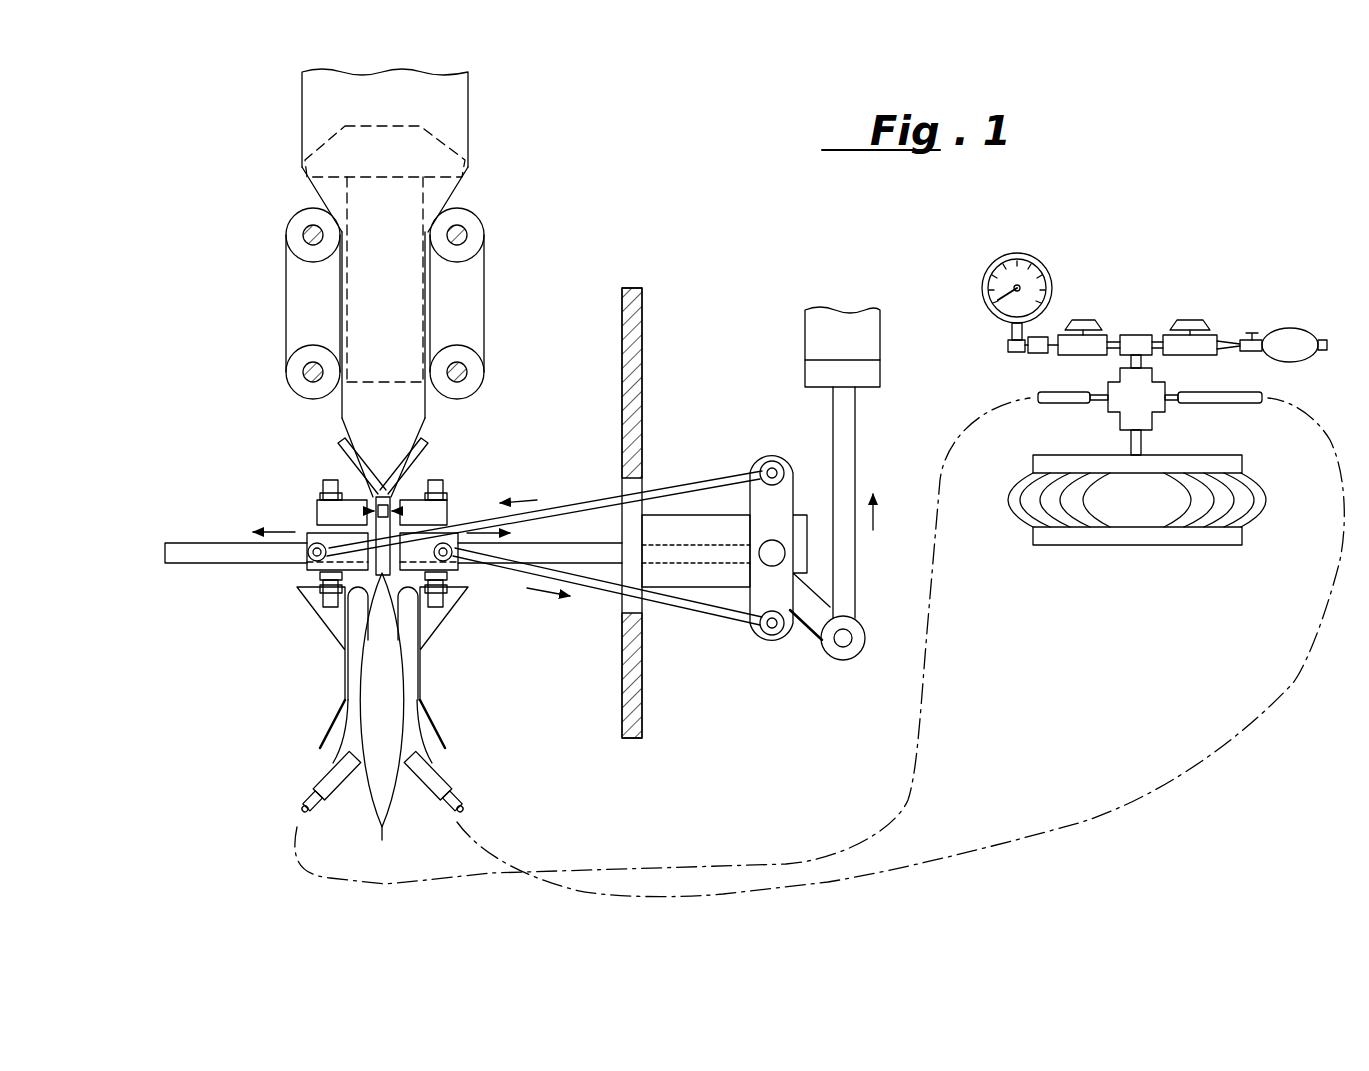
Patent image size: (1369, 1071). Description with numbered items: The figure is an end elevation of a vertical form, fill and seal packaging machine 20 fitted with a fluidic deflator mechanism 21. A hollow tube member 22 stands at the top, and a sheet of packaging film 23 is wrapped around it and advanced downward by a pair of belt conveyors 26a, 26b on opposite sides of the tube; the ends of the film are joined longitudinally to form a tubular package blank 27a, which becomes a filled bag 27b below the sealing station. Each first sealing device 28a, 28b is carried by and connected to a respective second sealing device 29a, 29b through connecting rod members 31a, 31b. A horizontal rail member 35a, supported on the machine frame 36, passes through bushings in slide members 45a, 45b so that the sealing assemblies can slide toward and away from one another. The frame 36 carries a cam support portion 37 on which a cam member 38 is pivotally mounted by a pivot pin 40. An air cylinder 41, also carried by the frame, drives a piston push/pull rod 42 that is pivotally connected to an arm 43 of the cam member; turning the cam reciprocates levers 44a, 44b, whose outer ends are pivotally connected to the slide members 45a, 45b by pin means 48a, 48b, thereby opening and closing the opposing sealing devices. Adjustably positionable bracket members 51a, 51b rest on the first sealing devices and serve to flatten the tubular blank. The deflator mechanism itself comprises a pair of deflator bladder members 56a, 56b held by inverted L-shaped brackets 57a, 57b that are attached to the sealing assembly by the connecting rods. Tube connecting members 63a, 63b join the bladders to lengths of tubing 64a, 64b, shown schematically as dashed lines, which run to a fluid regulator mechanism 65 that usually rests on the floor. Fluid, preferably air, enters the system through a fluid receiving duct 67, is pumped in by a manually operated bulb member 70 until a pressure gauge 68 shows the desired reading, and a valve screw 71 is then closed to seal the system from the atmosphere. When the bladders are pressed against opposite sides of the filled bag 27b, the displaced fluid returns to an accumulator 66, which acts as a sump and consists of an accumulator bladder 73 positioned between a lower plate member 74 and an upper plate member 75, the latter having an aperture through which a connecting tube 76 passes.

The packaging machine 20 is at (532, 214).
The fluidic deflator mechanism 21 is at (340, 673).
The hollow tube member 22 is at (370, 210).
The sheet of packaging film 23 is at (455, 108).
The belt conveyor 26a is at (284, 291).
The belt conveyor 26b is at (488, 287).
The package blank 27a is at (403, 412).
The filled bag 27b is at (382, 787).
The first sealing device 28a is at (325, 505).
The first sealing device 28b is at (438, 506).
The second sealing device 29a is at (310, 572).
The second sealing device 29b is at (448, 572).
The connecting rod member 31a is at (322, 480).
The connecting rod member 31b is at (440, 480).
The rail member 35a is at (205, 542).
The packaging machine frame 36 is at (640, 330).
The cam support portion 37 is at (700, 520).
The cam member 38 is at (795, 472).
The pivot pin 40 is at (770, 545).
The air cylinder 41 is at (842, 330).
The piston push/pull rod 42 is at (855, 470).
The arm 43 is at (812, 628).
The lever 44a is at (602, 500).
The lever 44b is at (604, 590).
The slide member 45a is at (300, 531).
The slide member 45b is at (512, 534).
The pin means 48a is at (308, 557).
The pin means 48b is at (455, 560).
The adjustably positionable bracket member 51a is at (336, 447).
The adjustably positionable bracket member 51b is at (430, 447).
The deflator bladder member 56a is at (350, 733).
The deflator bladder member 56b is at (412, 727).
The bracket 57a is at (340, 652).
The bracket 57b is at (427, 660).
The tube connecting member 63a is at (330, 783).
The tube connecting member 63b is at (435, 780).
The tubing 64a is at (300, 810).
The tubing 64b is at (460, 810).
The fluid regulator mechanism 65 is at (1140, 306).
The accumulator 66 is at (1262, 472).
The fluid receiving duct 67 is at (1228, 342).
The pressure gauge 68 is at (1000, 260).
The bulb member 70 is at (1298, 340).
The valve screw 71 is at (1253, 332).
The accumulator bladder 73 is at (1245, 500).
The plate member 74 is at (1156, 546).
The plate member 75 is at (1172, 465).
The connecting tube 76 is at (1130, 442).